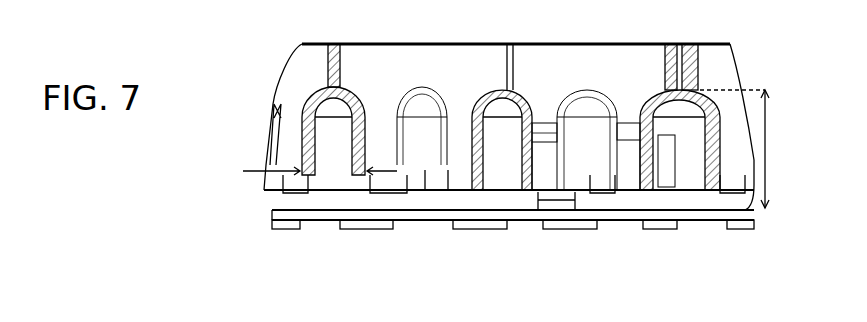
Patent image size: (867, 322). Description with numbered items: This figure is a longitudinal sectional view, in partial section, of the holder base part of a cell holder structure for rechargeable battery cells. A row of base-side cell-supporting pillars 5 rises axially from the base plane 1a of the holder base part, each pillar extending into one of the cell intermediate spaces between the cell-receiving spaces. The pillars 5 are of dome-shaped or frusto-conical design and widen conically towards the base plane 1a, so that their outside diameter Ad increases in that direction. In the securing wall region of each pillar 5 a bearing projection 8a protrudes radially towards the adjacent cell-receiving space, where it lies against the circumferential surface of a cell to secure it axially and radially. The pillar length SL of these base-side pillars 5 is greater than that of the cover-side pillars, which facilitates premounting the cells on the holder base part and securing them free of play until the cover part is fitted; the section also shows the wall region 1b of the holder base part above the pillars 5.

The base plane 1a is at (553, 227).
The upper housing part 1b is at (335, 63).
The cell-supporting pillar 5 is at (540, 162).
The bearing projection 8a is at (410, 197).
The outside diameter Ad is at (327, 172).
The pillar length SL is at (768, 153).